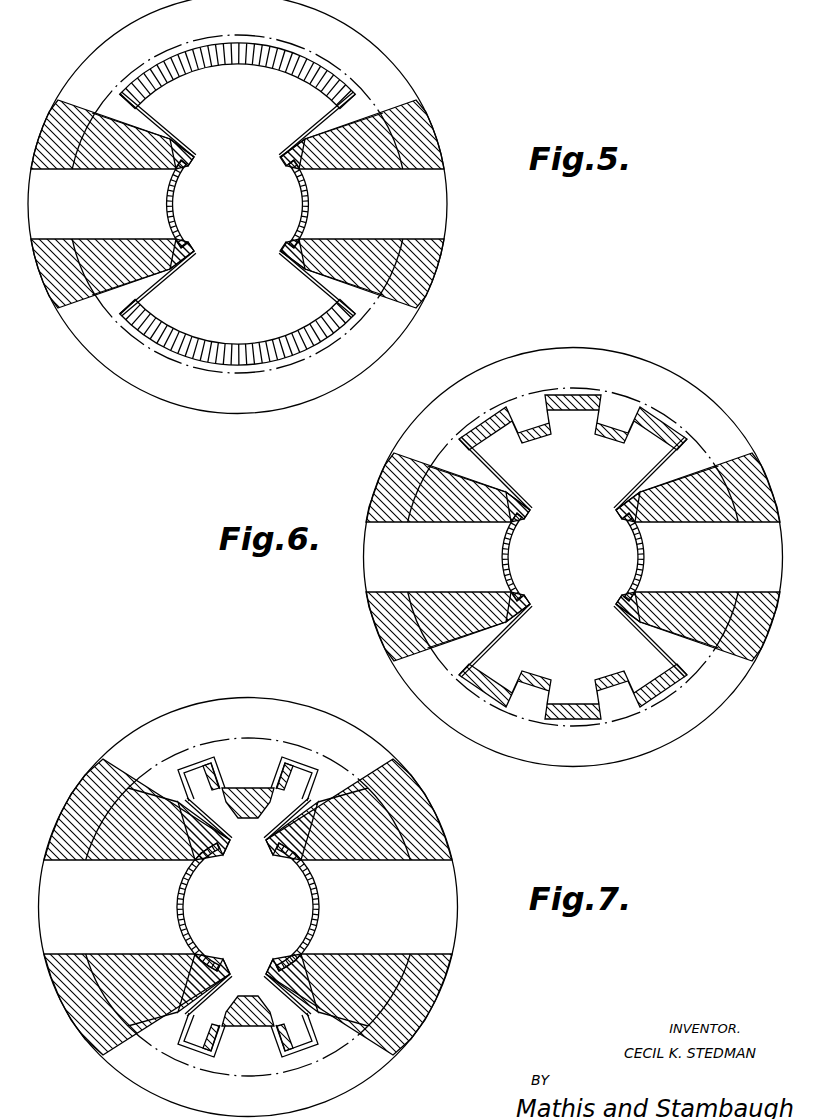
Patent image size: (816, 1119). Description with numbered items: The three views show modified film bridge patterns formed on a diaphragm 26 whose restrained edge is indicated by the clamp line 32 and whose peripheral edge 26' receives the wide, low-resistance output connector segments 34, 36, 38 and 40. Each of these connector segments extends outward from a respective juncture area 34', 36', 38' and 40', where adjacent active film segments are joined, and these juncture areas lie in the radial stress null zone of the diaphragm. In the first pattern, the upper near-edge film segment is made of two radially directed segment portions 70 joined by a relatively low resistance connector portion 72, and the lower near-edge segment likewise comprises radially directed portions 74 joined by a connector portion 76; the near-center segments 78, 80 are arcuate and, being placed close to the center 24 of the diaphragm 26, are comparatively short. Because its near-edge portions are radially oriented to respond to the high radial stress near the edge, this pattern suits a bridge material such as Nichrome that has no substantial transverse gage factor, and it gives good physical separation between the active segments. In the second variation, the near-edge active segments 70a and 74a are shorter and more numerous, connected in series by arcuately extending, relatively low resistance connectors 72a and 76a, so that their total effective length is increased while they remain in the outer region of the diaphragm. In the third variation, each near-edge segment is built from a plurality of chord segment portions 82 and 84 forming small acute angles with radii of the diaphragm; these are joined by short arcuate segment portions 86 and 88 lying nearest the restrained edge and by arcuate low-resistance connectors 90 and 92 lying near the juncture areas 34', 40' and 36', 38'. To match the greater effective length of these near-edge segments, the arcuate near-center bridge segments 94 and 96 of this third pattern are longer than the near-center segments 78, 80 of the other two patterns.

In FIG. 5, the center 24 is at (238, 212).
In FIG. 6, the center 24 is at (568, 560).
In FIG. 7, the center 24 is at (251, 915).
In FIG. 5, the diaphragm 26 is at (232, 128).
In FIG. 6, the diaphragm 26 is at (574, 490).
In FIG. 7, the diaphragm 26 is at (247, 882).
In FIG. 5, the peripheral edge 26' is at (237, 207).
In FIG. 6, the peripheral edge 26' is at (573, 557).
In FIG. 7, the peripheral edge 26' is at (248, 907).
In FIG. 5, the clamp line 32 is at (127, 68).
In FIG. 6, the clamp line 32 is at (465, 410).
In FIG. 7, the clamp line 32 is at (140, 740).
In FIG. 5, the output connector segment 34 is at (362, 145).
In FIG. 6, the output connector segment 34 is at (698, 498).
In FIG. 7, the output connector segment 34 is at (359, 824).
In FIG. 5, the juncture area 34' is at (286, 136).
In FIG. 6, the juncture area 34' is at (612, 518).
In FIG. 7, the juncture area 34' is at (301, 840).
In FIG. 5, the output connector segment 36 is at (362, 262).
In FIG. 6, the output connector segment 36 is at (698, 613).
In FIG. 7, the output connector segment 36 is at (359, 990).
In FIG. 5, the juncture area 36' is at (279, 262).
In FIG. 6, the juncture area 36' is at (619, 589).
In FIG. 7, the juncture area 36' is at (301, 974).
In FIG. 5, the output connector segment 38 is at (112, 256).
In FIG. 6, the output connector segment 38 is at (448, 605).
In FIG. 7, the output connector segment 38 is at (137, 990).
In FIG. 5, the juncture area 38' is at (189, 262).
In FIG. 6, the juncture area 38' is at (529, 589).
In FIG. 7, the juncture area 38' is at (190, 971).
In FIG. 5, the output connector segment 40 is at (112, 145).
In FIG. 6, the output connector segment 40 is at (448, 497).
In FIG. 7, the output connector segment 40 is at (137, 824).
In FIG. 5, the juncture area 40' is at (186, 136).
In FIG. 6, the juncture area 40' is at (537, 510).
In FIG. 7, the juncture area 40' is at (199, 840).
In FIG. 5, the radially directed segment portions 70 is at (152, 118).
In FIG. 5, the connector portion 72 is at (228, 55).
In FIG. 5, the radially directed segment portions 74 is at (150, 285).
In FIG. 5, the connector portion 76 is at (225, 352).
In FIG. 5, the near-center segment 78 is at (172, 201).
In FIG. 6, the near-center segment 78 is at (508, 551).
In FIG. 5, the near-center segment 80 is at (303, 201).
In FIG. 6, the near-center segment 80 is at (640, 553).
In FIG. 6, the near-edge active segments 70a is at (500, 445).
In FIG. 6, the arcuately extending connectors 72a is at (490, 415).
In FIG. 6, the near-edge active segments 74a is at (500, 656).
In FIG. 6, the arcuately extending connectors 76a is at (490, 682).
In FIG. 7, the segment portions 82 is at (197, 785).
In FIG. 7, the segment portions 84 is at (200, 1026).
In FIG. 7, the arcuately extending segment portions 86 is at (190, 770).
In FIG. 7, the arcuately extending segment portions 88 is at (185, 1056).
In FIG. 7, the connector 90 is at (243, 790).
In FIG. 7, the connector 92 is at (248, 1031).
In FIG. 7, the near-center bridge segment 94 is at (180, 907).
In FIG. 7, the near-center bridge segment 96 is at (315, 908).